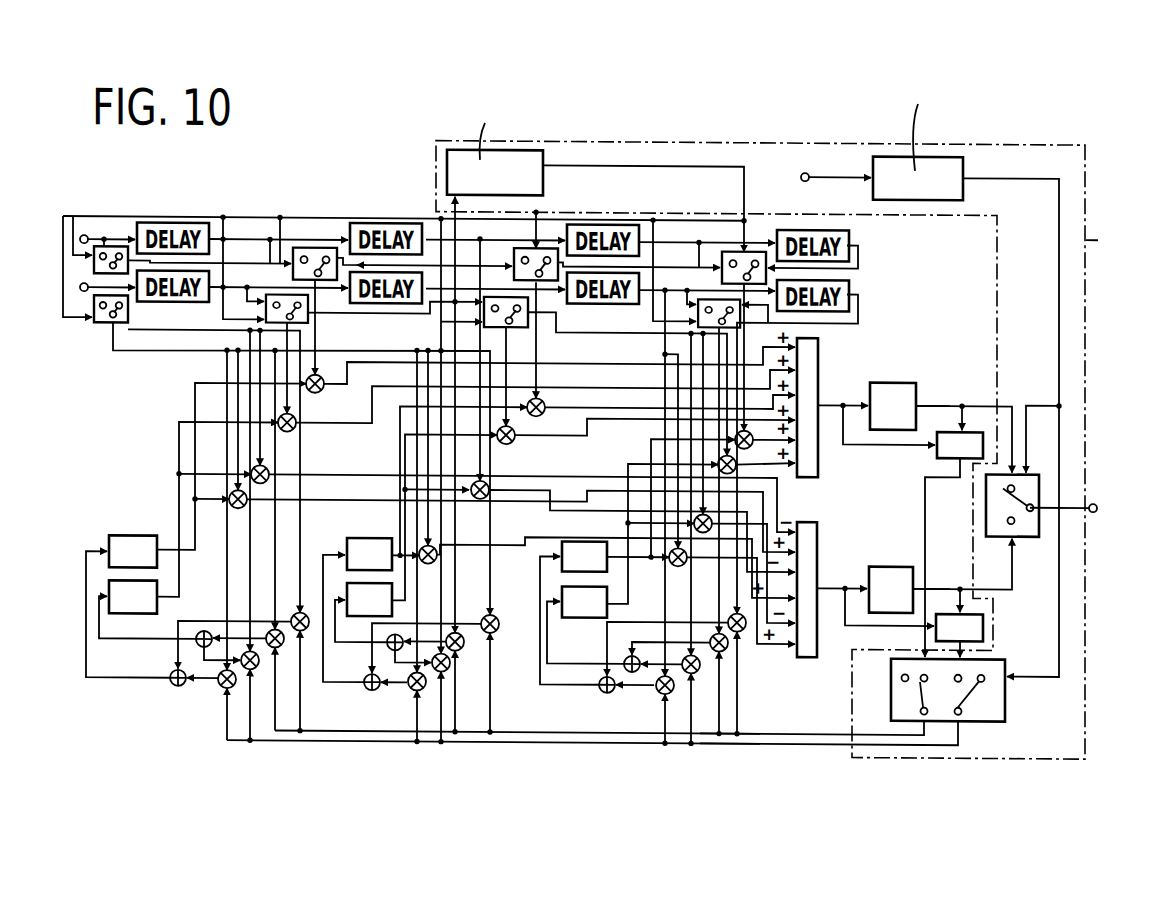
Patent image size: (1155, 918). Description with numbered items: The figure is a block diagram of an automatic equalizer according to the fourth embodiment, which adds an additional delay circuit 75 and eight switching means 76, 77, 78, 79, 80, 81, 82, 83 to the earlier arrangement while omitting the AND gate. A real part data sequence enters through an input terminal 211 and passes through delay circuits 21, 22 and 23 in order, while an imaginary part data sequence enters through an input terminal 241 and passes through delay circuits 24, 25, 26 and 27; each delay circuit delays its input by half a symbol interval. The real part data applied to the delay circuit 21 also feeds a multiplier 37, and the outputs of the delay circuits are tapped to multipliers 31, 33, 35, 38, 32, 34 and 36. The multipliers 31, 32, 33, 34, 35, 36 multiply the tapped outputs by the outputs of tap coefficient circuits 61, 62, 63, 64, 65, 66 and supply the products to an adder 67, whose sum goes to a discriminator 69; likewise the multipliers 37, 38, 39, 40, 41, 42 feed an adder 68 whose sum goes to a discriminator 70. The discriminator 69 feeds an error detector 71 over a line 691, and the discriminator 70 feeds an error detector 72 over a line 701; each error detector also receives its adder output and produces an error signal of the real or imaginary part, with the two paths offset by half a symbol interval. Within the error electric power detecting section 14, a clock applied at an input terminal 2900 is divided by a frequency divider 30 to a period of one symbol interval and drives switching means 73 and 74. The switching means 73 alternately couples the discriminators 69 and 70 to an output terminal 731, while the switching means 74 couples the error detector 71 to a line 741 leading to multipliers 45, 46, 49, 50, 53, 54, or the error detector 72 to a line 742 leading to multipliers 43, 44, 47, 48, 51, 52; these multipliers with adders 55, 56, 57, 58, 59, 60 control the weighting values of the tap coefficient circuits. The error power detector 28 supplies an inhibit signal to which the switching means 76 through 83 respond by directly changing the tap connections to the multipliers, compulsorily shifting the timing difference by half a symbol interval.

The input terminal 211 is at (85, 235).
The input terminal 241 is at (84, 292).
The additional delay circuit 75 is at (200, 222).
The delay circuit 24 is at (195, 302).
The delay circuit 21 is at (386, 221).
The delay circuit 25 is at (392, 301).
The delay circuit 22 is at (640, 236).
The delay circuit 26 is at (612, 300).
The delay circuit 23 is at (850, 240).
The delay circuit 27 is at (850, 292).
The switching means 76 is at (118, 242).
The switching means 80 is at (118, 322).
The switching means 77 is at (315, 242).
The switching means 81 is at (308, 320).
The switching means 78 is at (526, 245).
The switching means 82 is at (528, 320).
The switching means 79 is at (730, 247).
The switching means 83 is at (714, 295).
The error electric power detector 28 is at (543, 180).
The frequency divider 30 is at (963, 196).
The input terminal 2900 is at (806, 176).
The error electric power detecting section 14 is at (1106, 243).
The multiplier 31 is at (322, 388).
The multiplier 32 is at (296, 428).
The multiplier 33 is at (544, 410).
The multiplier 34 is at (514, 438).
The multiplier 35 is at (752, 442).
The multiplier 36 is at (736, 466).
The multiplier 37 is at (270, 468).
The multiplier 38 is at (232, 506).
The multiplier 39 is at (480, 497).
The multiplier 40 is at (437, 560).
The multiplier 41 is at (711, 526).
The multiplier 42 is at (670, 560).
The multiplier 43 is at (220, 684).
The multiplier 44 is at (256, 667).
The multiplier 45 is at (270, 628).
The multiplier 46 is at (302, 610).
The multiplier 47 is at (410, 686).
The multiplier 48 is at (449, 668).
The multiplier 49 is at (462, 646).
The multiplier 50 is at (496, 628).
The multiplier 51 is at (658, 687).
The multiplier 52 is at (698, 668).
The multiplier 53 is at (726, 646).
The multiplier 54 is at (742, 627).
The adder 55 is at (172, 684).
The adder 56 is at (204, 630).
The adder 57 is at (365, 686).
The adder 58 is at (387, 644).
The adder 59 is at (600, 686).
The adder 60 is at (625, 658).
The tap coefficient circuit 61 is at (133, 535).
The tap coefficient circuit 64 is at (133, 613).
The tap coefficient circuit 62 is at (372, 532).
The tap coefficient circuit 65 is at (358, 614).
The tap coefficient circuit 63 is at (585, 538).
The tap coefficient circuit 66 is at (585, 614).
The adder 67 is at (818, 366).
The adder 68 is at (809, 652).
The discriminator 69 is at (893, 377).
The line 691 is at (935, 400).
The discriminator 70 is at (895, 558).
The line 701 is at (942, 583).
The error detector 71 is at (970, 426).
The error detector 72 is at (983, 612).
The switching means 73 is at (1028, 530).
The output terminal 731 is at (1100, 495).
The switching means 74 is at (1000, 653).
The line 741 is at (815, 724).
The line 742 is at (786, 739).